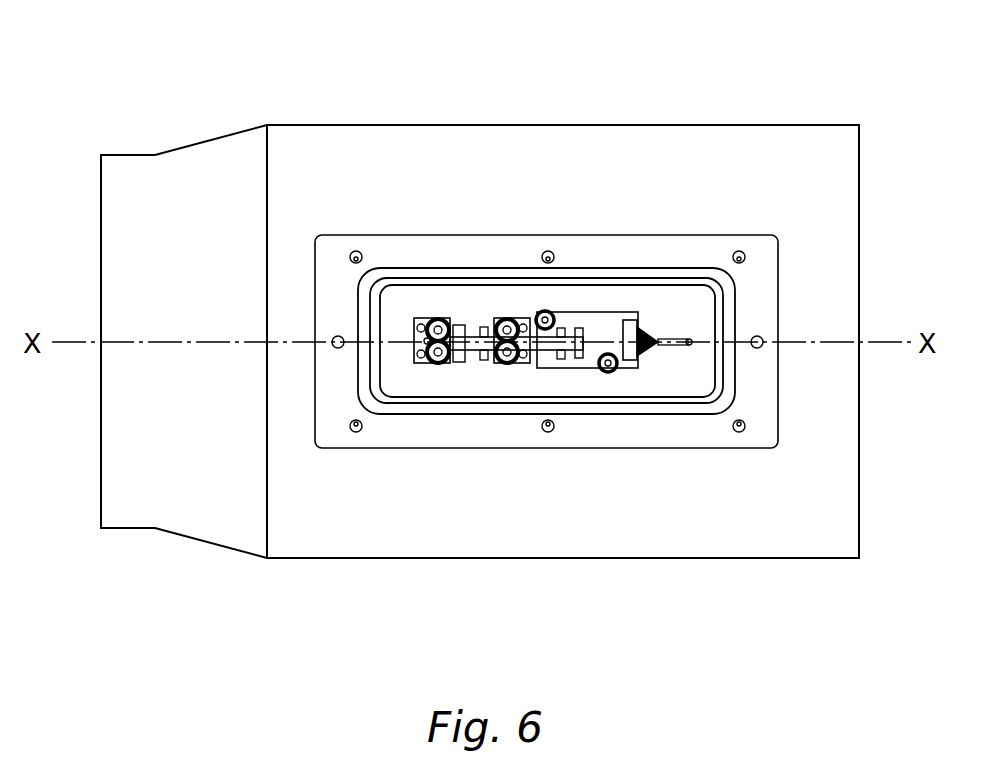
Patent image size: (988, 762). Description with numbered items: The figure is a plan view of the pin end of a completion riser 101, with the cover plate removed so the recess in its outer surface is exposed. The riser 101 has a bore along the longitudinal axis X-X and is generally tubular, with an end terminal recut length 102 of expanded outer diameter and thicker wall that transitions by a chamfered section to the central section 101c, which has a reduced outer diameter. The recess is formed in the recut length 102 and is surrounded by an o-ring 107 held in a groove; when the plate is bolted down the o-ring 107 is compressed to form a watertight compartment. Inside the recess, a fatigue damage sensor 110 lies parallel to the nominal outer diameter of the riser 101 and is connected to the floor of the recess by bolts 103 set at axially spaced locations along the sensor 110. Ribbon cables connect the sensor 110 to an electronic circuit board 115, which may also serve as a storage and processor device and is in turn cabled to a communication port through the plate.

The completion riser 101 is at (181, 105).
The central section 101c is at (120, 153).
The end terminal recut length 102 is at (288, 125).
The bolts 103 is at (506, 320).
The o-ring 107 is at (678, 404).
The fatigue damage sensor 110 is at (468, 365).
The electronic circuit board 115 is at (580, 370).